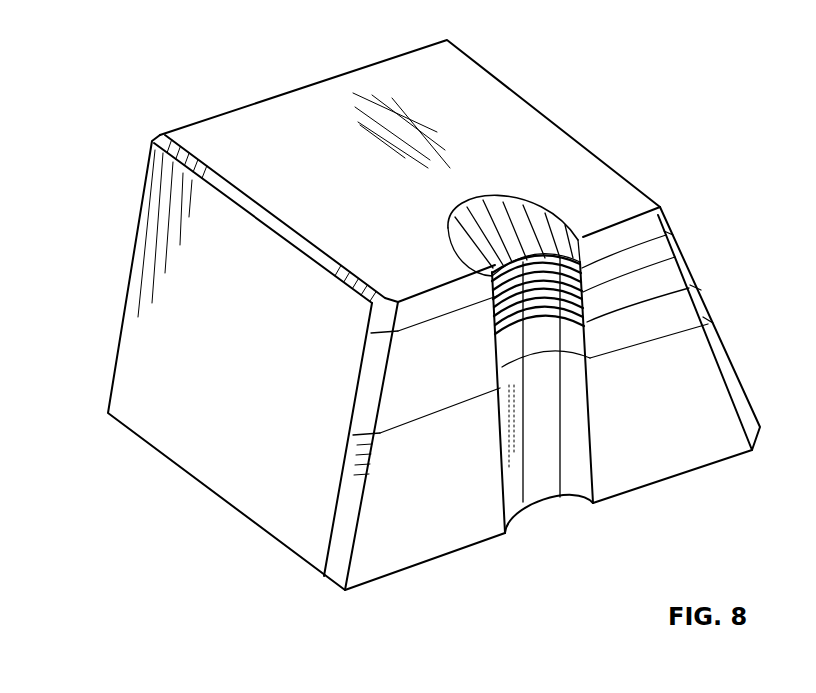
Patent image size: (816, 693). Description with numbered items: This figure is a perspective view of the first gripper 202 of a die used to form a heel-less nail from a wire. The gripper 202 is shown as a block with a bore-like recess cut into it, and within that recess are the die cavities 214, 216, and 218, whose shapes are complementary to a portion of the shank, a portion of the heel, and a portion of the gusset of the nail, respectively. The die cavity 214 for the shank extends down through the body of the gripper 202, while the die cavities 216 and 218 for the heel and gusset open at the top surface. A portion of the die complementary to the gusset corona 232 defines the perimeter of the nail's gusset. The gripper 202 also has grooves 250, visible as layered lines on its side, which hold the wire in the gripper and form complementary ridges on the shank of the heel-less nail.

The gripper 202 is at (463, 78).
The die cavity 214 is at (545, 380).
The die cavity 216 is at (460, 212).
The die cavity 218 is at (500, 228).
The gusset corona 232 is at (577, 230).
The grooves 250 is at (650, 263).